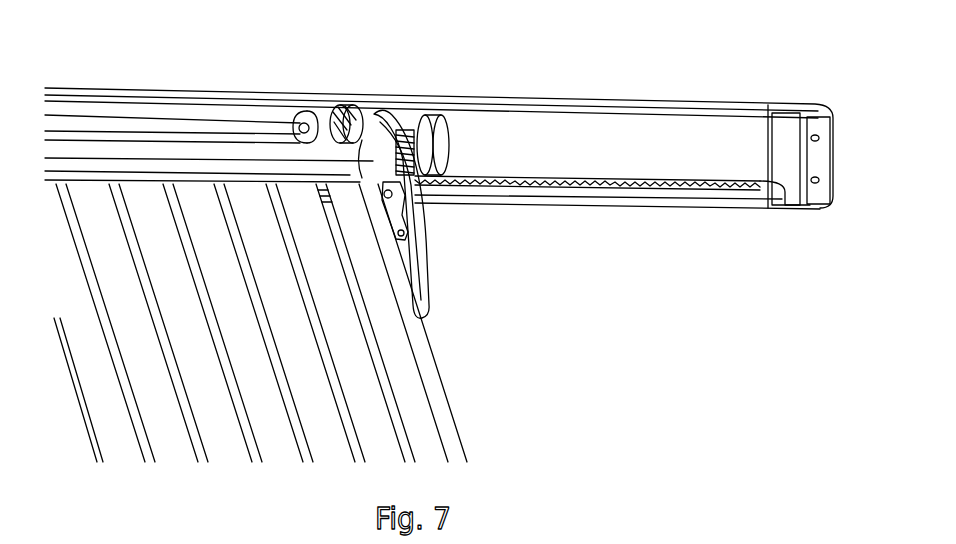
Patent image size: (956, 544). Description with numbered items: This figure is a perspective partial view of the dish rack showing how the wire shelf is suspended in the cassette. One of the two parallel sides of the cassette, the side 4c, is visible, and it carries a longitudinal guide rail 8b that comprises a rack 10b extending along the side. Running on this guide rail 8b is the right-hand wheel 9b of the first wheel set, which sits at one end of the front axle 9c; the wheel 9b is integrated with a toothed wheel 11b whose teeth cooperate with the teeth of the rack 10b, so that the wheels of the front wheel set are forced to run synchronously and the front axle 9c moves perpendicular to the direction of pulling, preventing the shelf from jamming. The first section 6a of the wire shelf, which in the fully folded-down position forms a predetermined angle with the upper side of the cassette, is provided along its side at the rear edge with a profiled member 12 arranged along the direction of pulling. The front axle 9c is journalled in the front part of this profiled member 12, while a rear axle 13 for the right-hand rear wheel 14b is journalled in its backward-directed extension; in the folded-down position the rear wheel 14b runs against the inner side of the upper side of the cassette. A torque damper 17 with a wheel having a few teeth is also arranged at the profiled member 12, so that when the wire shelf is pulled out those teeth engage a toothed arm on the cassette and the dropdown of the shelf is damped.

The side of the cassette 4c is at (588, 155).
The first section of the wire shelf 6a is at (445, 402).
The guide rail 8b is at (718, 209).
The wheel of the first wheel set 9b is at (444, 133).
The front axle 9c is at (180, 150).
The rack 10b is at (677, 178).
The toothed wheel 11b is at (400, 130).
The profiled member 12 is at (430, 262).
The rear axle 13 is at (247, 127).
The rear wheel 14b is at (328, 127).
The torque damper 17 is at (392, 212).